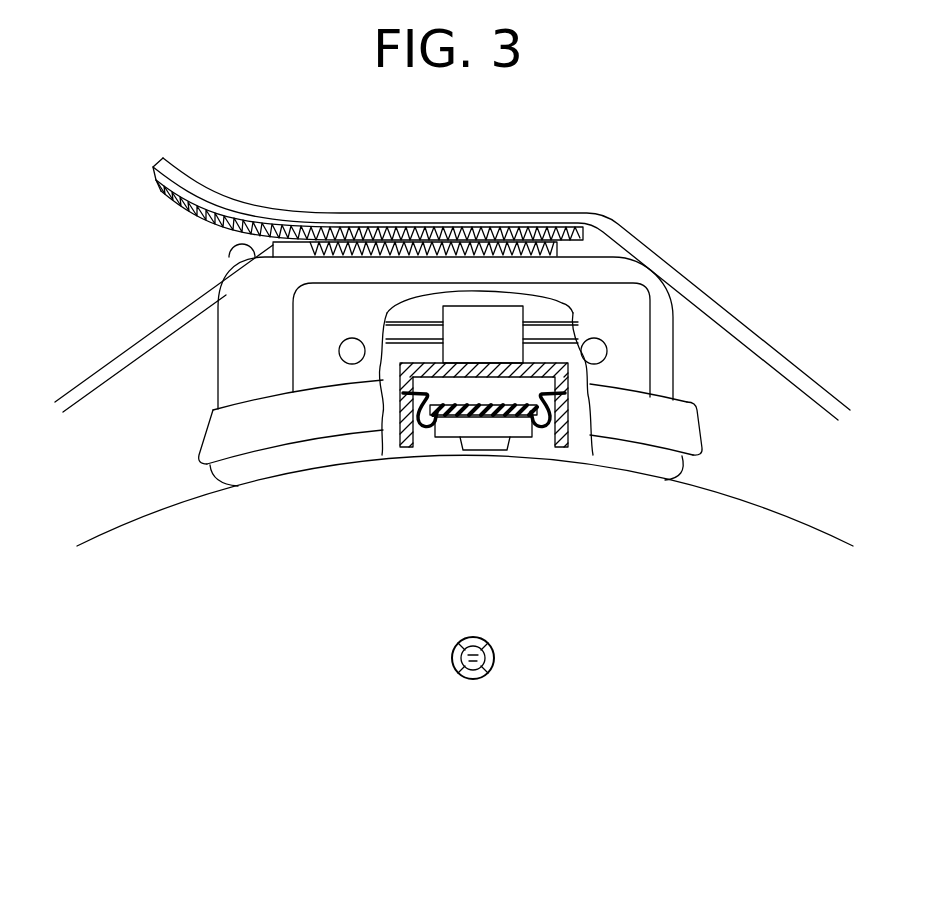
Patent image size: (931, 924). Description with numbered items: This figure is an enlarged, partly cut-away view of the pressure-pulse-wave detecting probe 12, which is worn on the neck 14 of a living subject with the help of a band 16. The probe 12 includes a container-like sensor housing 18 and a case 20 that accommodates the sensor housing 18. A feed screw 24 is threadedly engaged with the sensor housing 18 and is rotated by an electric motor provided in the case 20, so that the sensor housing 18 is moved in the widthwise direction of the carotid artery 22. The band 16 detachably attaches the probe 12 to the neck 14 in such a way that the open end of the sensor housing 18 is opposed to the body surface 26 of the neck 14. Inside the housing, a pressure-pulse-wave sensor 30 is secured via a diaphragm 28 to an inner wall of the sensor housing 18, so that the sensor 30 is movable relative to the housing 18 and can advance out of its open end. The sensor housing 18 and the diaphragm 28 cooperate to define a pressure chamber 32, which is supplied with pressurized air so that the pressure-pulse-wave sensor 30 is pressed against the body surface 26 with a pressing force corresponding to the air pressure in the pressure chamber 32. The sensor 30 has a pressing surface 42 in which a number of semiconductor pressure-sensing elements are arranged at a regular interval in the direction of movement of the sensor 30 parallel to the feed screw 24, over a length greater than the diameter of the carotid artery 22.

The pressure-pulse-wave detecting probe 12 is at (120, 152).
The neck 14 is at (168, 520).
The band 16 is at (128, 351).
The sensor housing 18 is at (583, 369).
The case 20 is at (608, 263).
The carotid artery 22 is at (473, 712).
The feed screw 24 is at (575, 303).
The body surface 26 is at (743, 488).
The diaphragm 28 is at (538, 432).
The pressure-pulse-wave sensor 30 is at (457, 425).
The pressure chamber 32 is at (525, 398).
The pressing surface 42 is at (477, 453).